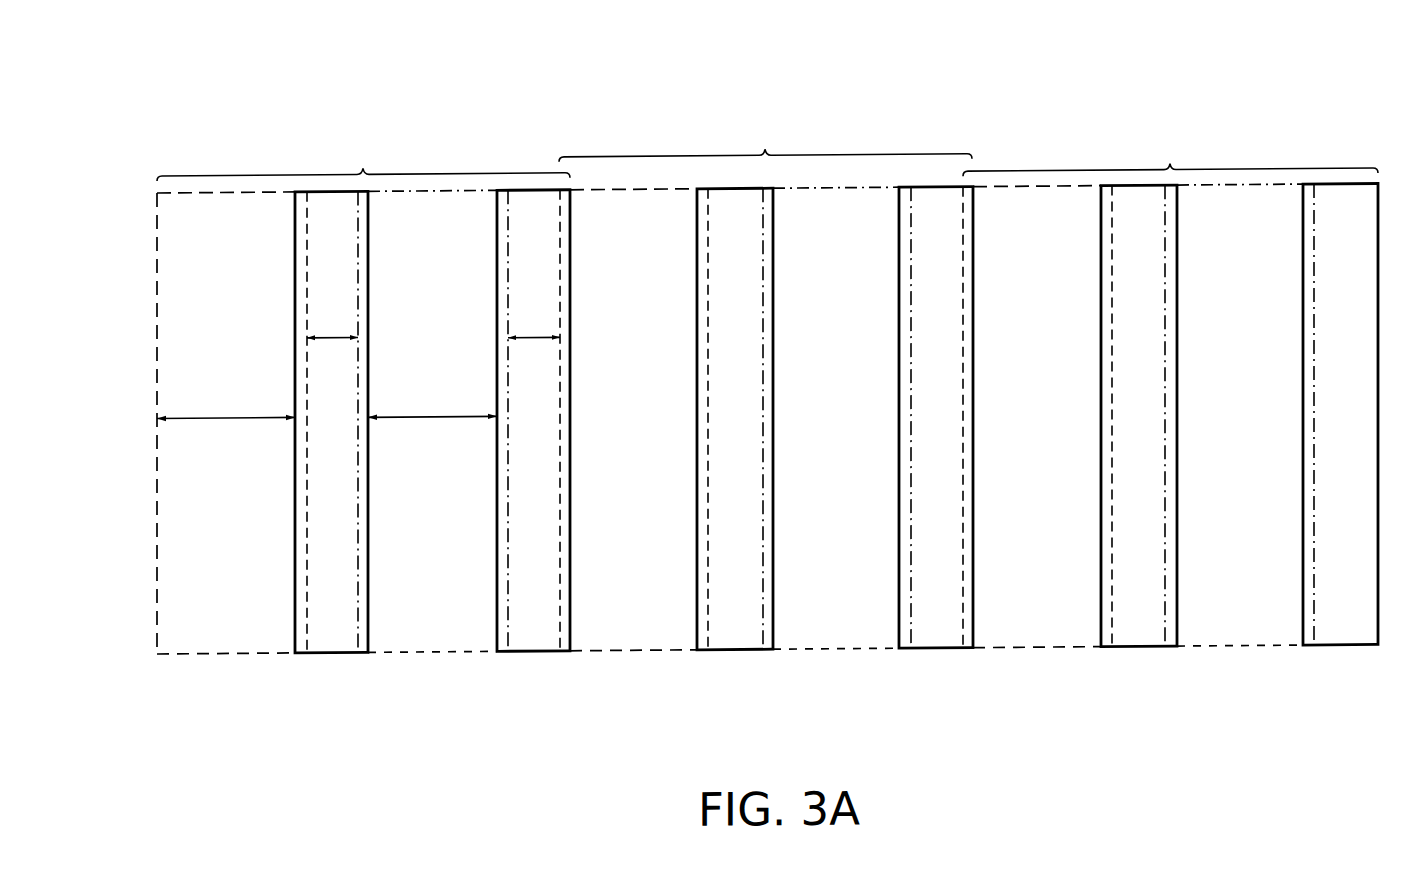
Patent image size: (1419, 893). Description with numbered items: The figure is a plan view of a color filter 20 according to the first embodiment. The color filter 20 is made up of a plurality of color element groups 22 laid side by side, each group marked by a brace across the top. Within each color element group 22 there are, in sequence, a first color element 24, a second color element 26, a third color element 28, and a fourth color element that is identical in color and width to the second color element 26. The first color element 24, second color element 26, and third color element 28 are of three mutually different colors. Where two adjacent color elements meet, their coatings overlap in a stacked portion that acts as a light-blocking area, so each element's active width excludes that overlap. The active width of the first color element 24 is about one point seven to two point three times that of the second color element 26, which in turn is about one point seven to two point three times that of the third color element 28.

The color filter 20 is at (1345, 101).
The color element group 22 is at (767, 147).
The first color element 24 is at (225, 643).
The second color element 26 is at (736, 464).
The third color element 28 is at (437, 643).